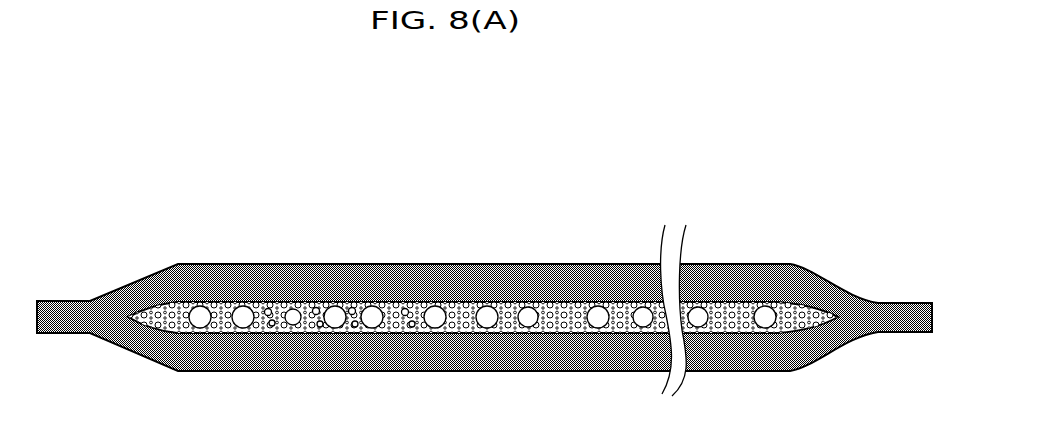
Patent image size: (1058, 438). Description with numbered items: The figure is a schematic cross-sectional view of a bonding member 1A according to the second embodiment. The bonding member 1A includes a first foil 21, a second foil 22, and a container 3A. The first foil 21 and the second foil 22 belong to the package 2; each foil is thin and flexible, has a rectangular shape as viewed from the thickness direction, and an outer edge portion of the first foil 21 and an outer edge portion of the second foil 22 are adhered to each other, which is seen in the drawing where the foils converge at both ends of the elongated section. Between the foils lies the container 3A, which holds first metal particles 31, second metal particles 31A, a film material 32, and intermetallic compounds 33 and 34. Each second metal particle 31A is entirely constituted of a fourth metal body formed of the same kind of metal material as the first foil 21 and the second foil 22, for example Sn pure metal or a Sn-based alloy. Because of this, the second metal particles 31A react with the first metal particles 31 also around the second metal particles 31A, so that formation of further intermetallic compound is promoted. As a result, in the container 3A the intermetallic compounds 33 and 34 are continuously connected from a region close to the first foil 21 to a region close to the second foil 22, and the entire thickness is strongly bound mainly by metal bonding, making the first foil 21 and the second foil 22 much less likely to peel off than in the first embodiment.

The bonding member 1A is at (475, 231).
The package 2 is at (484, 218).
The first foil 21 is at (570, 285).
The second foil 22 is at (618, 355).
The container 3A is at (468, 197).
The second metal particles 31A is at (202, 305).
The first metal particles 31 is at (270, 304).
The film material 32 is at (323, 303).
The intermetallic compound 33 is at (343, 303).
The intermetallic compound 34 is at (411, 235).